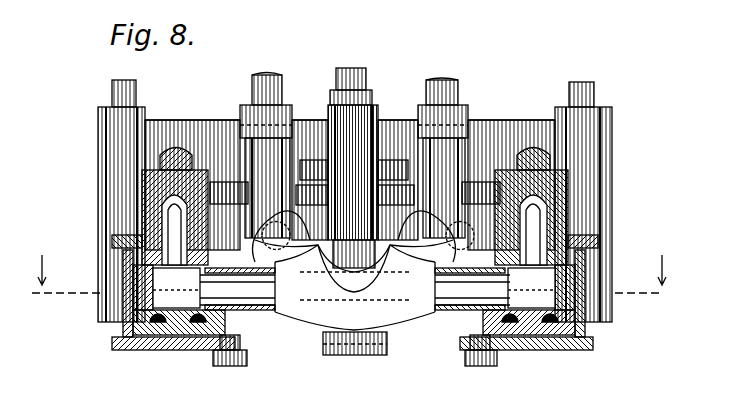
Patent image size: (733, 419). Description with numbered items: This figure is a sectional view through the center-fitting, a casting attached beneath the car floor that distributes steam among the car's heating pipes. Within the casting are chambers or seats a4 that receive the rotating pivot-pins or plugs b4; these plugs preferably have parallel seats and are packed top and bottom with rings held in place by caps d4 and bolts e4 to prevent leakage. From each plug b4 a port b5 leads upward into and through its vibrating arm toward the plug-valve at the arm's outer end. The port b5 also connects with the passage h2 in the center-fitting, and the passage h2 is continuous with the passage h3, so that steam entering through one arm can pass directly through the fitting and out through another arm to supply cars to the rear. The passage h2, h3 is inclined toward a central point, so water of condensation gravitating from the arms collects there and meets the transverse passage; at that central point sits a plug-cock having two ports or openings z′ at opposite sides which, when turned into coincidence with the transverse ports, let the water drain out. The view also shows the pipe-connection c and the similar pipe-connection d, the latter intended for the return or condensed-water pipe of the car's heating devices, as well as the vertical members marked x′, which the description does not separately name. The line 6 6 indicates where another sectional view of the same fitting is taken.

The vertical pipes / standards x′ is at (112, 90).
The pipe-connection c is at (252, 92).
The pipe-connection d is at (426, 92).
The chambers or seats a4 is at (142, 205).
The rotating pivot-pins or plugs b4 is at (354, 288).
The port b5 is at (355, 289).
The passage h2 is at (272, 315).
The passage h3 is at (436, 320).
The caps d4 is at (178, 350).
The bolts e4 is at (355, 360).
The ports or openings z′ is at (355, 353).
The section line 6 6 is at (345, 279).